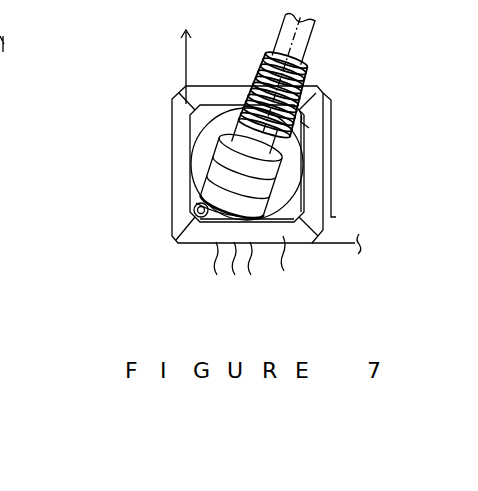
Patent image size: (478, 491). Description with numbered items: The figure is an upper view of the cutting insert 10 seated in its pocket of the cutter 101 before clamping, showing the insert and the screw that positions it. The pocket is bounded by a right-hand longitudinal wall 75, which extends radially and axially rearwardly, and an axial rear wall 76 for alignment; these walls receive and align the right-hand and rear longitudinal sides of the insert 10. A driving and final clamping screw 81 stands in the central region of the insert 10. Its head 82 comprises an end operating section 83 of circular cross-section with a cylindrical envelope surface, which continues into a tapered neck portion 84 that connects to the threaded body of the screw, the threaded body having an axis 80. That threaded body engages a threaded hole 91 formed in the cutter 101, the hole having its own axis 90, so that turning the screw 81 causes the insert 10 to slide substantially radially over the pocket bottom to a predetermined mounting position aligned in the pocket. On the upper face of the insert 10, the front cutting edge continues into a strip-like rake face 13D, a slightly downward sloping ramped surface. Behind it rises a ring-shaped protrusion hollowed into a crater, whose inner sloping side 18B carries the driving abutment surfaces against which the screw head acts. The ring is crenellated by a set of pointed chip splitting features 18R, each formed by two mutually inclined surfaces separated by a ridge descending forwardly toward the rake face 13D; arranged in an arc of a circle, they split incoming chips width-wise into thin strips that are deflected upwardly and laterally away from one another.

The cutting insert 10 is at (325, 166).
The strip-like rake face 13D is at (310, 271).
The inner sloping side 18B is at (283, 161).
The chip splitting features 18R is at (225, 278).
The right-hand longitudinal wall 75 is at (316, 128).
The rear wall 76 is at (214, 92).
The axis 80 is at (213, 259).
The driving and final clamping screw 81 is at (195, 207).
The head 82 is at (68, 140).
The end operating section 83 is at (226, 180).
The tapered neck portion 84 is at (238, 161).
The axis 90 is at (305, 19).
The threaded hole 91 is at (305, 55).
The cutter 101 is at (403, 117).